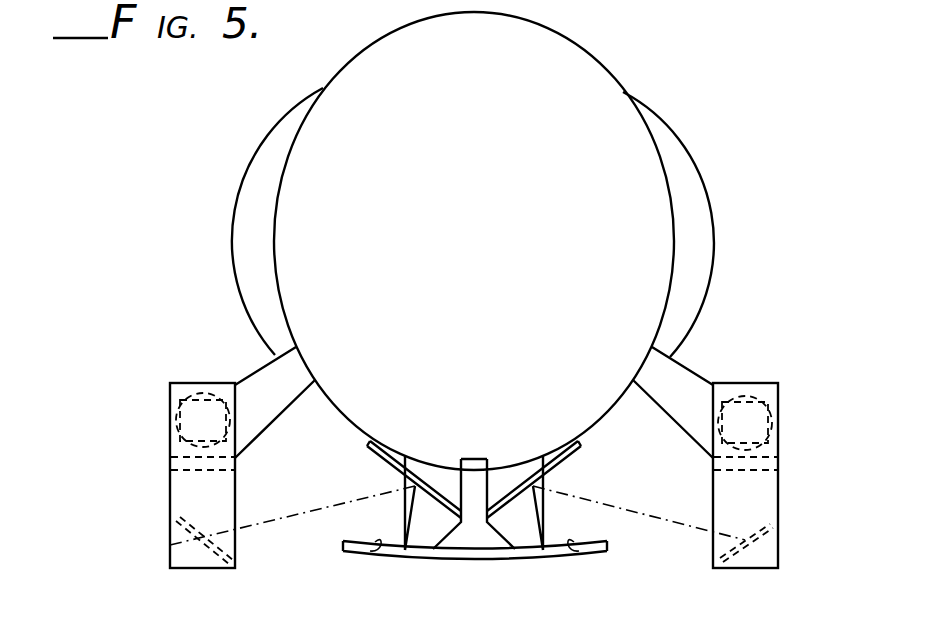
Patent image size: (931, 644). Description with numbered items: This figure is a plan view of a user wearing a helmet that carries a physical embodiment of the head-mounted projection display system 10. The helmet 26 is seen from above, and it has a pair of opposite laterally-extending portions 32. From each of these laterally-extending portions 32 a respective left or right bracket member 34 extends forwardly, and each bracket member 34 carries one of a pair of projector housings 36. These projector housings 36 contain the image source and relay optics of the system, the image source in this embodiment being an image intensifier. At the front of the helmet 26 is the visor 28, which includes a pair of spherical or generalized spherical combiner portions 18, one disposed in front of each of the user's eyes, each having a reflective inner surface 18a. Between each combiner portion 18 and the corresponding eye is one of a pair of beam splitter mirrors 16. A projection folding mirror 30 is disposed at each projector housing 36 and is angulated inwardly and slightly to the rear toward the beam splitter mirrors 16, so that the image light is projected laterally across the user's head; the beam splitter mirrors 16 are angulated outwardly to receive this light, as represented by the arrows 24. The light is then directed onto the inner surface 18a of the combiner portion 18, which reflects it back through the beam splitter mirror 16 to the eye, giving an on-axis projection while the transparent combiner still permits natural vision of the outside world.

The projection display system 10 is at (163, 475).
The beam splitter mirror 16 is at (370, 452).
The combiner 18 is at (423, 557).
The inner surface 18a is at (375, 542).
The light ray trace lines 24 is at (289, 515).
The helmet 26 is at (613, 90).
The visor 28 is at (390, 560).
The projection folding mirror 30 is at (167, 548).
The laterally-extending portion 32 is at (250, 163).
The bracket member 34 is at (267, 364).
The projector housing 36 is at (172, 423).